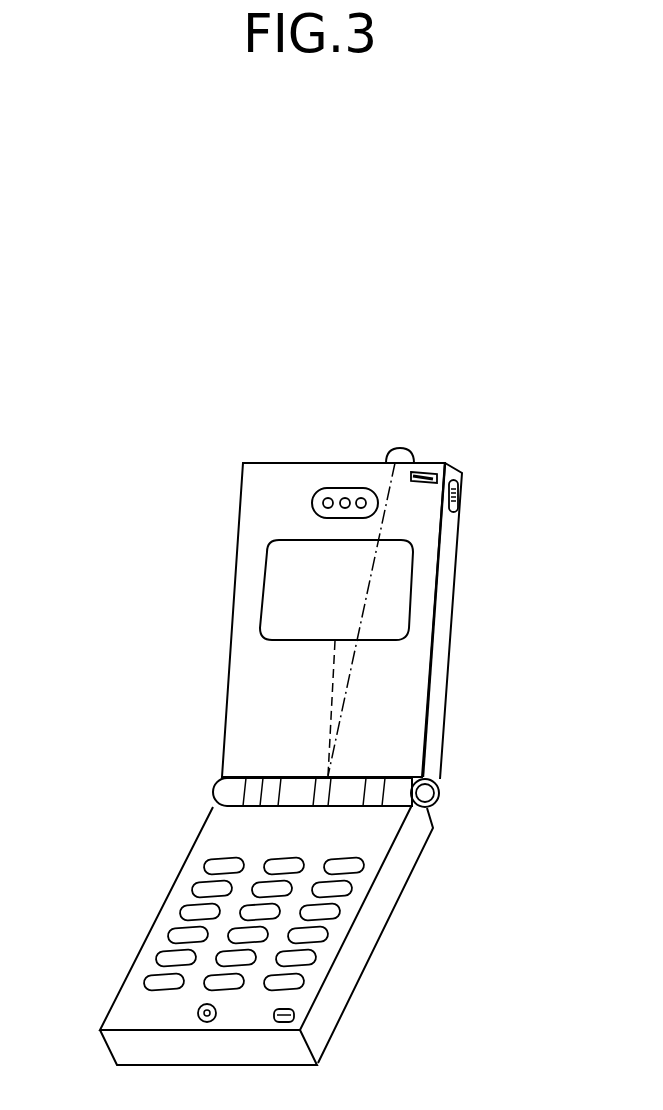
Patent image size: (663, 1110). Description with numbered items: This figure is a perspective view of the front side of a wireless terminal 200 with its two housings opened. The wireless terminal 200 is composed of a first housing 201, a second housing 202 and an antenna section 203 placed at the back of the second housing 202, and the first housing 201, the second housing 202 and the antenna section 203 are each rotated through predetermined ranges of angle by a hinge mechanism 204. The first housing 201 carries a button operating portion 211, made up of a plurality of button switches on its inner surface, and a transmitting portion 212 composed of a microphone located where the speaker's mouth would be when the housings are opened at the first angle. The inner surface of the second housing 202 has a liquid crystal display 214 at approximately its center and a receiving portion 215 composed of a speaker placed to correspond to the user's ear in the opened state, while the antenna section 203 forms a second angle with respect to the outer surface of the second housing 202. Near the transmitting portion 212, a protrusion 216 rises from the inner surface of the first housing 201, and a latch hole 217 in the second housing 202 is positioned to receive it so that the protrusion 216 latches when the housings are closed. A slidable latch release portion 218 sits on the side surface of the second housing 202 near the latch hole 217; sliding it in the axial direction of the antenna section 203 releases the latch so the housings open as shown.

The wireless terminal 200 is at (134, 669).
The first housing 201 is at (215, 657).
The second housing 202 is at (240, 590).
The antenna section 203 is at (412, 452).
The hinge mechanism 204 is at (218, 790).
The button operating portion 211 is at (285, 857).
The transmitting portion 212 is at (198, 1010).
The liquid crystal display 214 is at (303, 627).
The receiving portion 215 is at (312, 505).
The protrusion 216 is at (295, 1015).
The latch hole 217 is at (424, 483).
The slidable latch release portion 218 is at (458, 503).